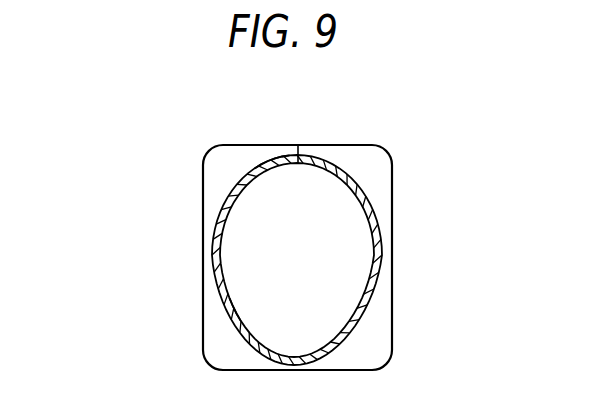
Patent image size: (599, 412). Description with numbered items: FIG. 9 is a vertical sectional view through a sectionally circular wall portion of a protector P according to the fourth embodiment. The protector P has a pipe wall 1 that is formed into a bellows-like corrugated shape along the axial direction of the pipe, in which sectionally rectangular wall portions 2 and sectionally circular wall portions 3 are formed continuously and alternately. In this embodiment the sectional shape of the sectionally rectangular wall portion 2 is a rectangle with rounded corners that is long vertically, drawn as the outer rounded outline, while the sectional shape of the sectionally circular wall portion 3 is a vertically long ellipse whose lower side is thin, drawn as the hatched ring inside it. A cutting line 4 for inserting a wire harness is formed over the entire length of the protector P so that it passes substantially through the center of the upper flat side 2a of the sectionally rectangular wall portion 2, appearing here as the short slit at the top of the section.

The pipe wall 1 is at (392, 282).
The sectionally rectangular wall portion 2 is at (204, 255).
The flat side 2a is at (262, 145).
The sectionally circular wall portion 3 is at (229, 315).
The cutting line 4 is at (298, 152).
The protector P is at (187, 192).